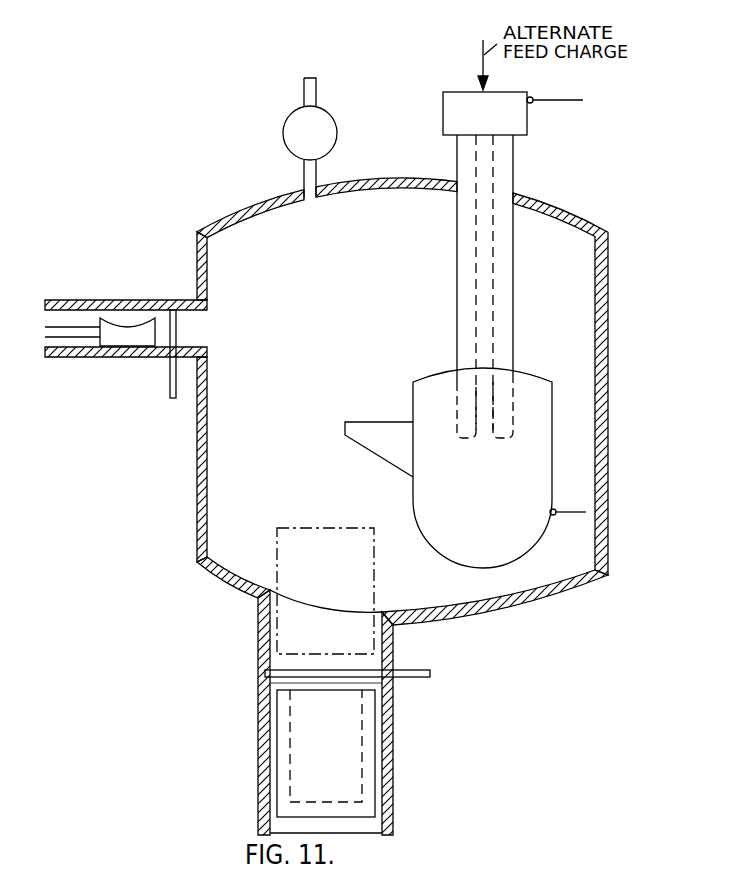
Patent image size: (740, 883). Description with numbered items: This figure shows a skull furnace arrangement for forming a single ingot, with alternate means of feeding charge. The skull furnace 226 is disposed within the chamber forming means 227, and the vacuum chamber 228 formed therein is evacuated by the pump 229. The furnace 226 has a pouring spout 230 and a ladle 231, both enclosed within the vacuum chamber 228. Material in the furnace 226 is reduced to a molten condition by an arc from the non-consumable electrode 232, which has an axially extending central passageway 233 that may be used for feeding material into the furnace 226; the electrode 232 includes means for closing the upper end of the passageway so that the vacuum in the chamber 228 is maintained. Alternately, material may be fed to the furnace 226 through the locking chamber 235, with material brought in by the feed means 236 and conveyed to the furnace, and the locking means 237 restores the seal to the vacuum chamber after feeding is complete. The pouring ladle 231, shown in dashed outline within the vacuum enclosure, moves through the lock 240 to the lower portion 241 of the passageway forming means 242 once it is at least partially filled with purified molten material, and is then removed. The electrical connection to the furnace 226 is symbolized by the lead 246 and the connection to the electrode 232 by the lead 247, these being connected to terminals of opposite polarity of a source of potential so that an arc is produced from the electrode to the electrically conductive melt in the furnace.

The skull furnace 226 is at (413, 390).
The chamber forming means 227 is at (607, 313).
The vacuum chamber 228 is at (386, 287).
The pump 229 is at (338, 128).
The pouring spout 230 is at (385, 453).
The ladle 231 is at (278, 535).
The non-consumable electrode 232 is at (515, 153).
The axially extending central passageway 233 is at (493, 175).
The locking chamber 235 is at (118, 318).
The feed means 236 is at (120, 340).
The locking means 237 is at (165, 384).
The lock 240 is at (417, 668).
The lower portion 241 is at (280, 680).
The passageway forming means 242 is at (392, 749).
The lead 246 is at (572, 518).
The lead 247 is at (547, 98).